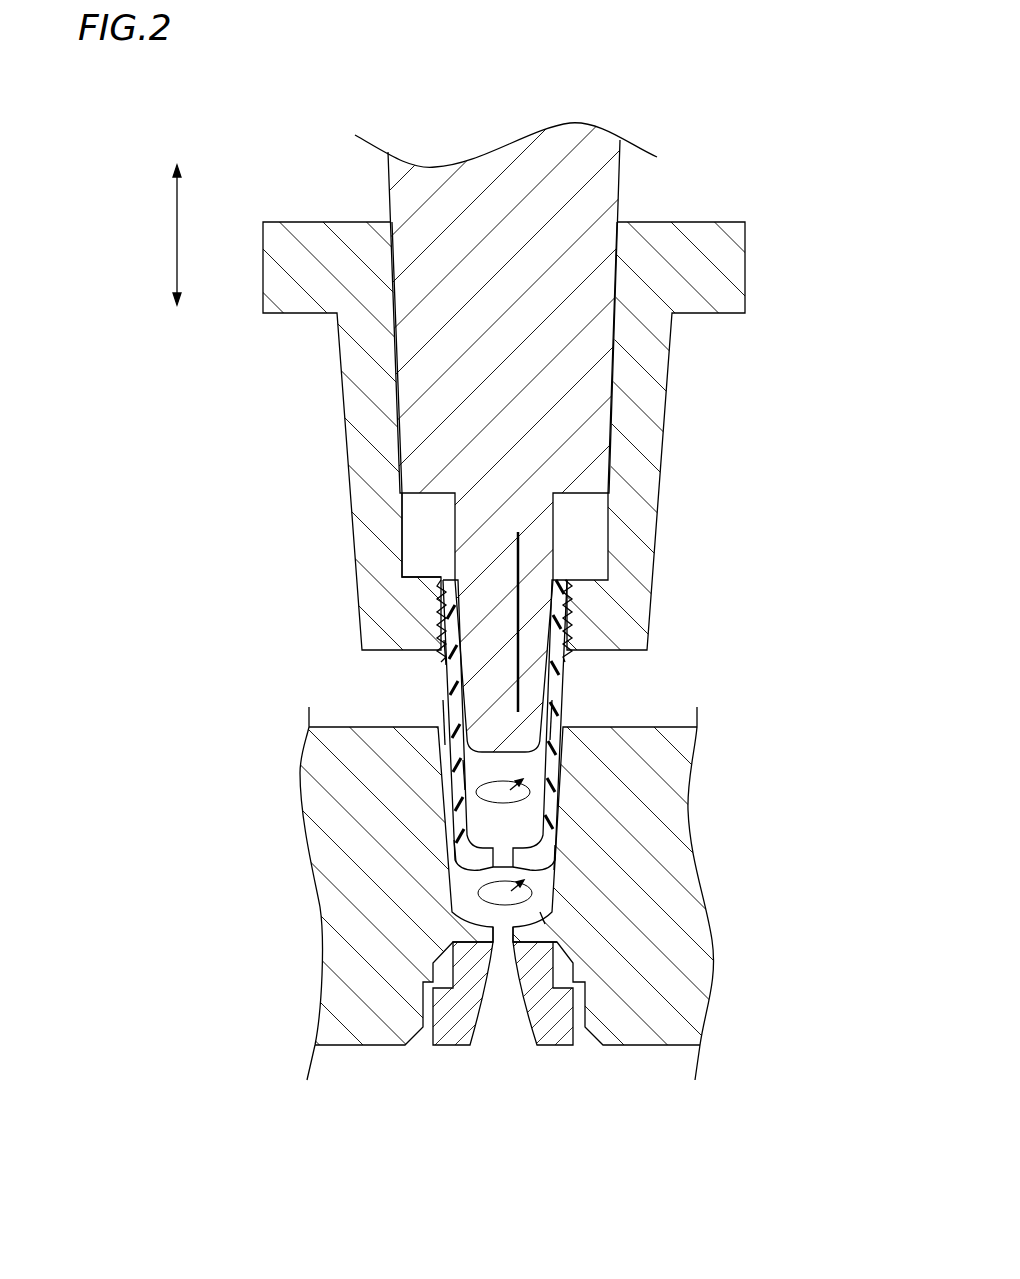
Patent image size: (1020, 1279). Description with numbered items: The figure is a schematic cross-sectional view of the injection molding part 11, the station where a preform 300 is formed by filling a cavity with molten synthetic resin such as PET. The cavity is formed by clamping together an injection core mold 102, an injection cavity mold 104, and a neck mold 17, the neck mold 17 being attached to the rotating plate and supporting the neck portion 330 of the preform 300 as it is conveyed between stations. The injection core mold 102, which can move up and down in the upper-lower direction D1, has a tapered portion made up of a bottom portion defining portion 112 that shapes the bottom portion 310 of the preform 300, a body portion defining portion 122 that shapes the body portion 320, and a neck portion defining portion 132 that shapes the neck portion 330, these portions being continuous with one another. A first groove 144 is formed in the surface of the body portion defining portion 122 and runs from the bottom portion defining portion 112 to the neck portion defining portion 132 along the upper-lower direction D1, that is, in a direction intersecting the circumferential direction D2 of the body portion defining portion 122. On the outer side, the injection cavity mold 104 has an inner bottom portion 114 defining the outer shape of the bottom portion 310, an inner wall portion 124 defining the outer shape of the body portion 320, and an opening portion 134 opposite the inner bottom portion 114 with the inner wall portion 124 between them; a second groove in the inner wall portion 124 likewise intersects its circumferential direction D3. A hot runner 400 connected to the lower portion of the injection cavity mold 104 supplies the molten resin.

The injection molding part 11 is at (751, 148).
The neck mold 17 is at (660, 338).
The injection core mold 102 is at (590, 381).
The injection cavity mold 104 is at (663, 833).
The bottom portion defining portion 112 is at (460, 768).
The inner bottom portion 114 is at (548, 917).
The body portion defining portion 122 is at (449, 653).
The inner wall portion 124 is at (557, 860).
The neck portion defining portion 132 is at (455, 532).
The opening portion 134 is at (447, 725).
The first groove 144 is at (518, 536).
The preform 300 is at (567, 677).
The bottom portion 310 is at (457, 852).
The body portion 320 is at (565, 718).
The neck portion 330 is at (567, 598).
The hot runner 400 is at (555, 1030).
The upper-lower direction D1 is at (179, 228).
The circumferential direction D2 is at (542, 807).
The circumferential direction D3 is at (550, 900).